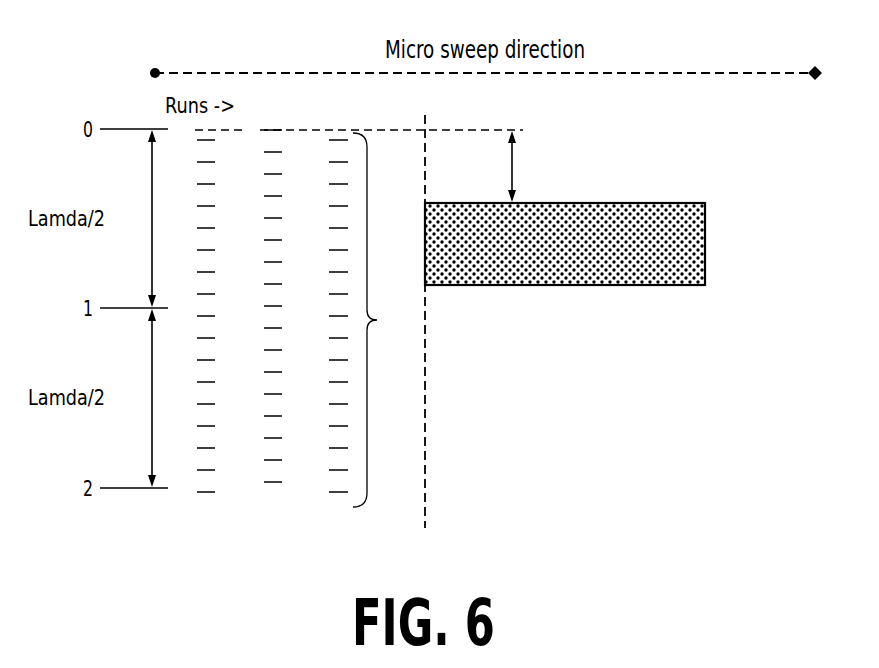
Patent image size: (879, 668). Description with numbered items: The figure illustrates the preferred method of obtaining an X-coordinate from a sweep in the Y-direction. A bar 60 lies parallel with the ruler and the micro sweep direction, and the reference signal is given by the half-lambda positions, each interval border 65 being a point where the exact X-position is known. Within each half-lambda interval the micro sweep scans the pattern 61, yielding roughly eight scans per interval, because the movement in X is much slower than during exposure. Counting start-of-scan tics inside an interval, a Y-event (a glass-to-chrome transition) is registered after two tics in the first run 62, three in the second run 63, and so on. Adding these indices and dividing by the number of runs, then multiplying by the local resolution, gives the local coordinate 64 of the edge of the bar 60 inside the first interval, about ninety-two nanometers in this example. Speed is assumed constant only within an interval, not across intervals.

The bar 60 is at (655, 243).
The pattern scans 61 is at (377, 320).
The first run 62 is at (195, 522).
The second run 63 is at (264, 508).
The local coordinate 64 is at (512, 172).
The interval border 65 is at (135, 309).